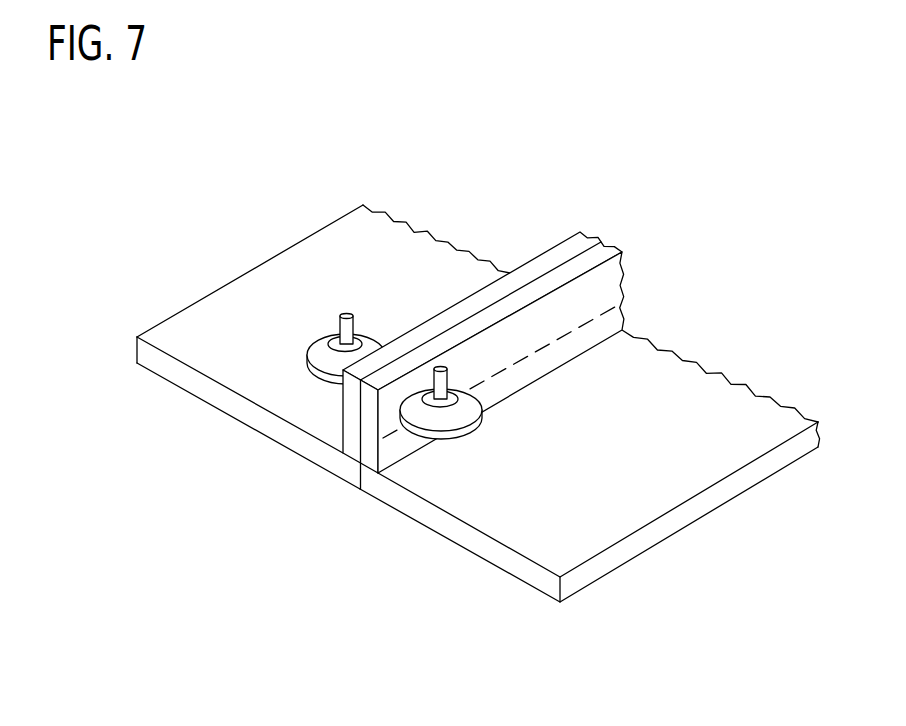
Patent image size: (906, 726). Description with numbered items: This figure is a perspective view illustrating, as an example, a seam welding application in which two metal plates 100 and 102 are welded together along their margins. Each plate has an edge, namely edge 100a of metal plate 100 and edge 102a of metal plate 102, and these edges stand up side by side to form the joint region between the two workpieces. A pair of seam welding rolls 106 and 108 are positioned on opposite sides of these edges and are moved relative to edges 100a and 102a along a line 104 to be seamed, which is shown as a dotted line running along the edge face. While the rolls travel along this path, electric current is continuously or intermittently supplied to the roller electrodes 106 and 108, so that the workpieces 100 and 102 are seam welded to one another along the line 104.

The metal plate 100 is at (290, 260).
The edge of metal plate 100a is at (553, 253).
The metal plate 102 is at (660, 492).
The edge of metal plate 102a is at (595, 283).
The line to be seamed 104 is at (548, 346).
The seam welding roll 106 is at (340, 380).
The seam welding roll 108 is at (433, 440).